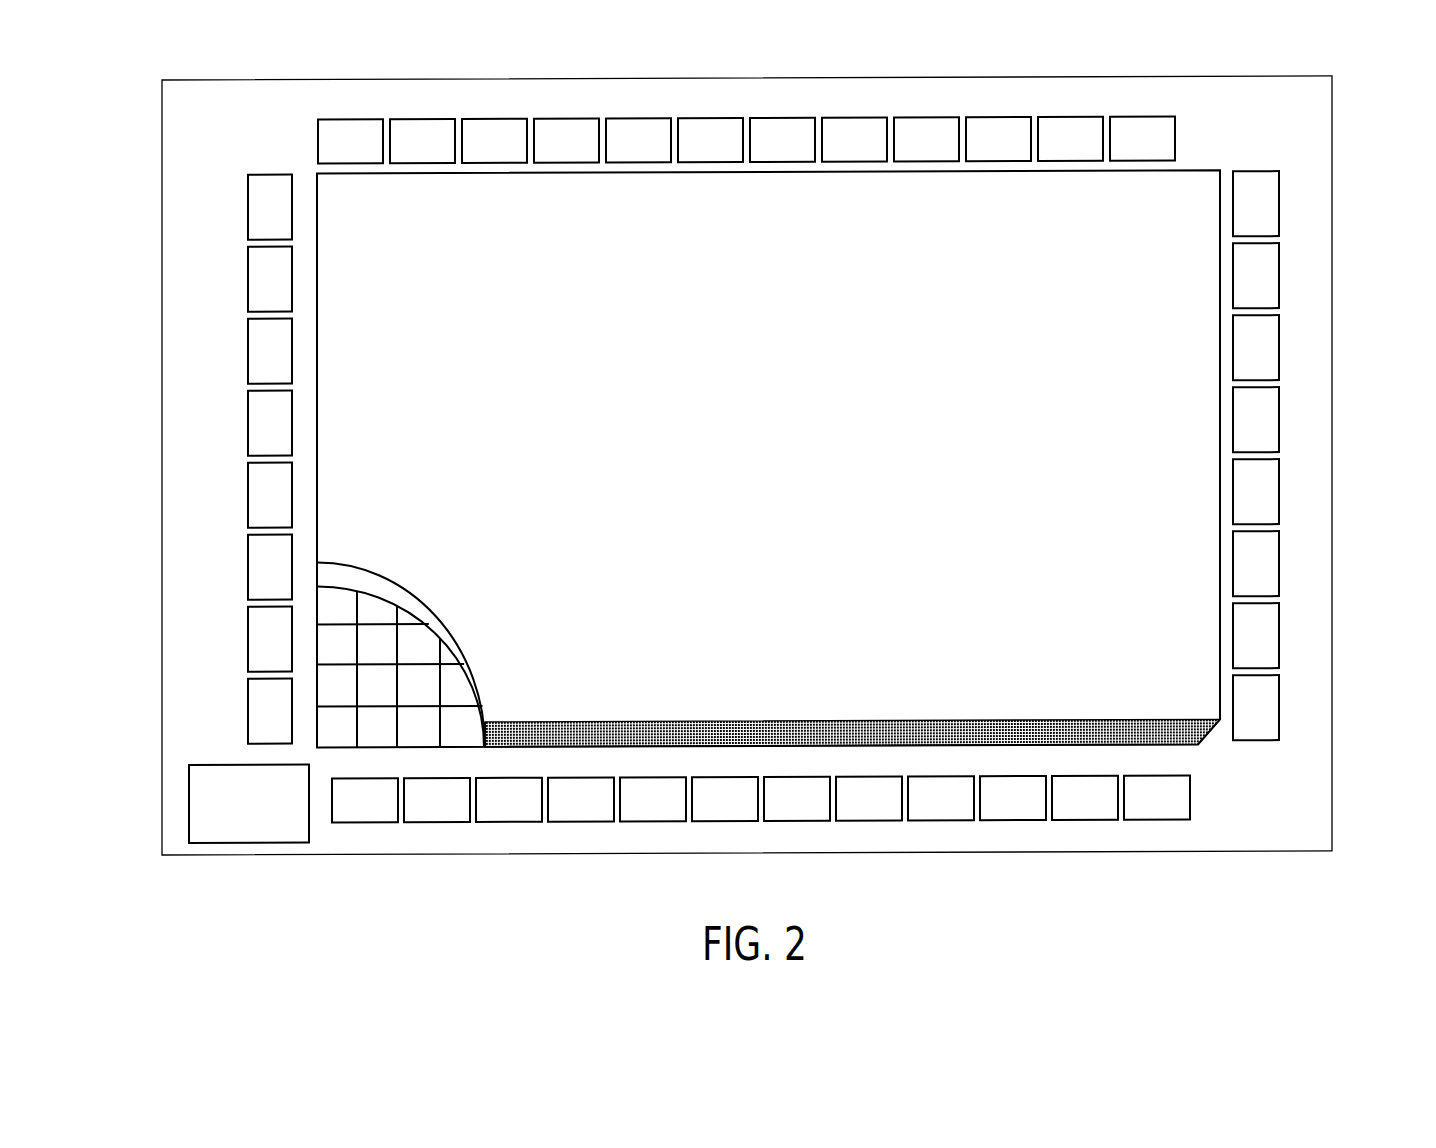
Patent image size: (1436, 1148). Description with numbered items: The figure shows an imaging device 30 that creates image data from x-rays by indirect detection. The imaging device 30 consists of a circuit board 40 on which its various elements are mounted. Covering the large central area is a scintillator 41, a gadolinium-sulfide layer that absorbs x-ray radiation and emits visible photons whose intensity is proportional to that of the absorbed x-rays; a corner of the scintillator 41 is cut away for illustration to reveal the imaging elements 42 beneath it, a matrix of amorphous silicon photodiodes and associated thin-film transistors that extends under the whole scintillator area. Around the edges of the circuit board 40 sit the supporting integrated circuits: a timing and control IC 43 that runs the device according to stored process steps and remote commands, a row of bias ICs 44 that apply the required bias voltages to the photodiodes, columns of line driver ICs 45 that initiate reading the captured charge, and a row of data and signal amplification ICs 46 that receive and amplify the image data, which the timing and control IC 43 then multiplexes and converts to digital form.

The imaging device 30 is at (1397, 140).
The circuit board 40 is at (1125, 78).
The scintillator 41 is at (393, 593).
The imaging elements 42 is at (425, 650).
The timing and control IC 43 is at (243, 763).
The bias ICs 44 is at (363, 116).
The line driver ICs 45 is at (235, 370).
The data and signal amplification ICs 46 is at (1168, 828).